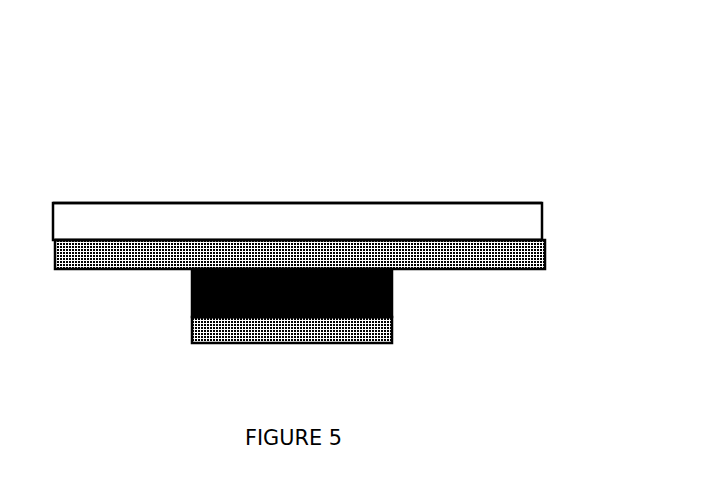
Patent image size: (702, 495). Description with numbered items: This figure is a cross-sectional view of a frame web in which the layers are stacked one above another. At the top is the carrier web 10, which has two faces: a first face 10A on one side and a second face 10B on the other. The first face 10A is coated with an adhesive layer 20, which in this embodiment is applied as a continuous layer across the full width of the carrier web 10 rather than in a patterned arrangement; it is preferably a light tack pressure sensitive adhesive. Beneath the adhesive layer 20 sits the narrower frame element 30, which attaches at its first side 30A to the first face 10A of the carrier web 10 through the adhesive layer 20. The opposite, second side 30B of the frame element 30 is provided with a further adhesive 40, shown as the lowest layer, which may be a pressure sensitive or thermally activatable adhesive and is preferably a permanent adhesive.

The carrier web 10 is at (297, 221).
The first face 10A is at (197, 203).
The second face 10B is at (188, 243).
The adhesive layer 20 is at (300, 254).
The frame element 30 is at (292, 293).
The first side 30A is at (363, 257).
The second side 30B is at (390, 320).
The adhesive 40 is at (292, 330).